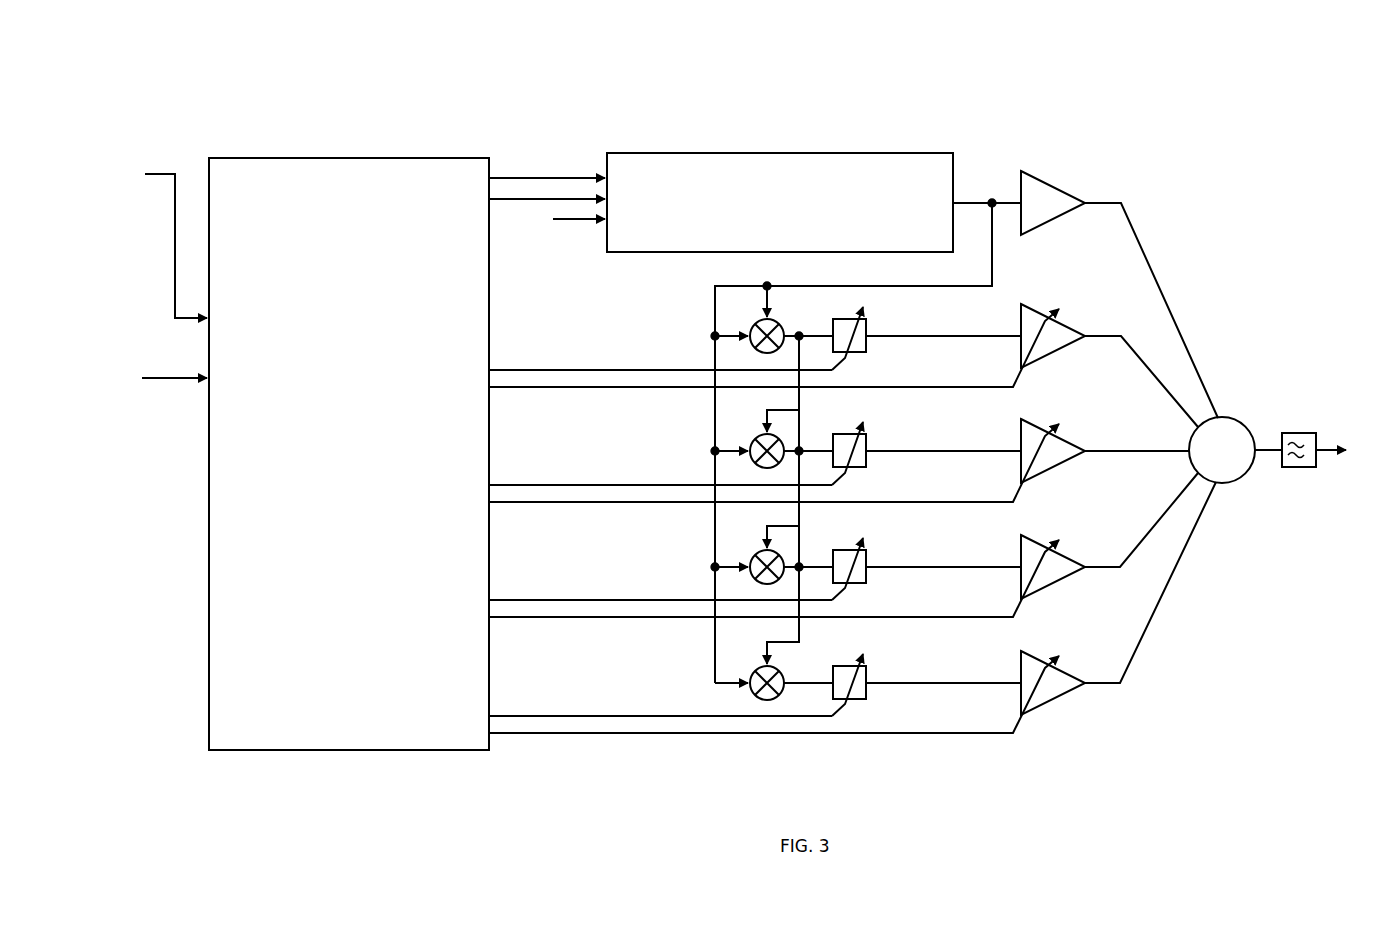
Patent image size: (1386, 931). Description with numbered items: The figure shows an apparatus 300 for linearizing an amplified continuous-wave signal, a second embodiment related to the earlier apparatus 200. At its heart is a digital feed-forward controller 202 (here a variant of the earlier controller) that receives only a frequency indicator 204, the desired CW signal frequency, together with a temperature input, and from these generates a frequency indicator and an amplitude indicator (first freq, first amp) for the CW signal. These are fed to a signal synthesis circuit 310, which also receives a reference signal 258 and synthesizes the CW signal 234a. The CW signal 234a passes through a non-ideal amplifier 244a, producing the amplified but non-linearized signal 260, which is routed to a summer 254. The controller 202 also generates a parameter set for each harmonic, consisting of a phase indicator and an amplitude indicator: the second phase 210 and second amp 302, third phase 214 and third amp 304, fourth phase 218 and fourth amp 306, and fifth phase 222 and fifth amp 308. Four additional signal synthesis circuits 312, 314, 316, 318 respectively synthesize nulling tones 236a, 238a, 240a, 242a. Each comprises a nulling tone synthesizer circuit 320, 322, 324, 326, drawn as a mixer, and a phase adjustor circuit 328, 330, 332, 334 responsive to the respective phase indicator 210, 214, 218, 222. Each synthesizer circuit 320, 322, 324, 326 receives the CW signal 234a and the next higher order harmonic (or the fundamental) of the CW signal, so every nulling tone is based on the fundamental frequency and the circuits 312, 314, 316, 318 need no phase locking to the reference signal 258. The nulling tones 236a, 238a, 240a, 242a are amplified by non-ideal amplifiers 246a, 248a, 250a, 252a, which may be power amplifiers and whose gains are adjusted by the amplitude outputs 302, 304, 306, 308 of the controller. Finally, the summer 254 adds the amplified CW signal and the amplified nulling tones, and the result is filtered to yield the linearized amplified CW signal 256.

The apparatus 300 is at (862, 94).
The digital feed-forward controller 202 is at (342, 752).
The frequency indicator 204 is at (220, 95).
The apparatus 200 is at (245, 363).
The signal synthesis circuit 310 is at (685, 202).
The reference signal 258 is at (563, 225).
The CW signal 234a is at (972, 200).
The non-ideal amplifier 244a is at (1050, 225).
The amplified non-linearized CW signal 260 is at (1162, 287).
The nulling tone synthesizer circuit 320 is at (775, 318).
The nulling tone synthesizer circuit 322 is at (775, 433).
The nulling tone synthesizer circuit 324 is at (775, 549).
The nulling tone synthesizer circuit 326 is at (775, 665).
The phase adjustor circuit 328 is at (867, 327).
The phase adjustor circuit 330 is at (867, 442).
The phase adjustor circuit 332 is at (867, 558).
The phase adjustor circuit 334 is at (867, 674).
The nulling tone 236a is at (935, 337).
The nulling tone 238a is at (935, 452).
The nulling tone 240a is at (935, 568).
The nulling tone 242a is at (935, 684).
The non-ideal amplifier 246a is at (1050, 358).
The non-ideal amplifier 248a is at (1050, 473).
The non-ideal amplifier 250a is at (1050, 589).
The non-ideal amplifier 252a is at (1050, 705).
The 2nd phase indicator 210 is at (558, 370).
The 3rd phase indicator 214 is at (558, 485).
The 4th phase indicator 218 is at (558, 600).
The 5th phase indicator 222 is at (558, 716).
The 2nd amp indicator 302 is at (492, 391).
The 3rd amp indicator 304 is at (492, 506).
The 4th amp indicator 306 is at (492, 621).
The 5th amp indicator 308 is at (492, 737).
The signal synthesis circuit 312 is at (686, 347).
The signal synthesis circuit 314 is at (686, 462).
The signal synthesis circuit 316 is at (686, 578).
The signal synthesis circuit 318 is at (686, 690).
The summer 254 is at (1232, 483).
The linearized amplified CW signal 256 is at (1300, 432).